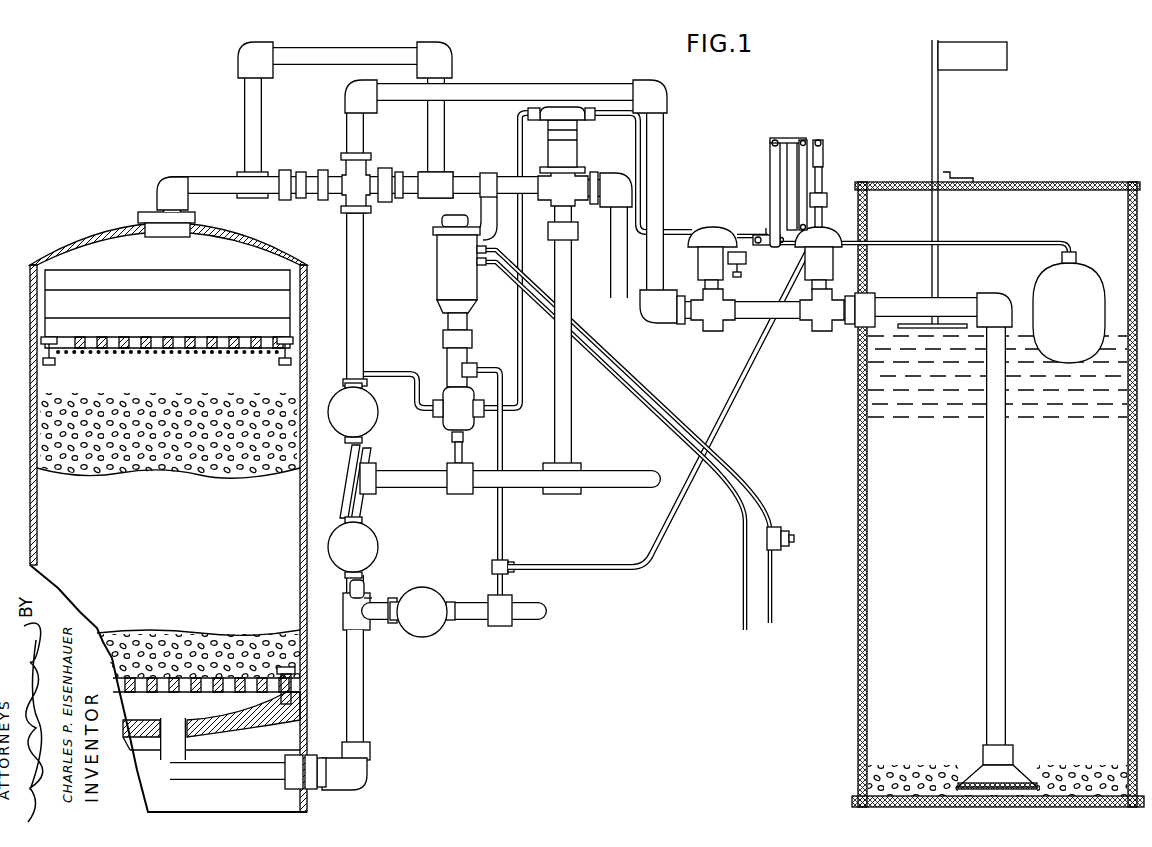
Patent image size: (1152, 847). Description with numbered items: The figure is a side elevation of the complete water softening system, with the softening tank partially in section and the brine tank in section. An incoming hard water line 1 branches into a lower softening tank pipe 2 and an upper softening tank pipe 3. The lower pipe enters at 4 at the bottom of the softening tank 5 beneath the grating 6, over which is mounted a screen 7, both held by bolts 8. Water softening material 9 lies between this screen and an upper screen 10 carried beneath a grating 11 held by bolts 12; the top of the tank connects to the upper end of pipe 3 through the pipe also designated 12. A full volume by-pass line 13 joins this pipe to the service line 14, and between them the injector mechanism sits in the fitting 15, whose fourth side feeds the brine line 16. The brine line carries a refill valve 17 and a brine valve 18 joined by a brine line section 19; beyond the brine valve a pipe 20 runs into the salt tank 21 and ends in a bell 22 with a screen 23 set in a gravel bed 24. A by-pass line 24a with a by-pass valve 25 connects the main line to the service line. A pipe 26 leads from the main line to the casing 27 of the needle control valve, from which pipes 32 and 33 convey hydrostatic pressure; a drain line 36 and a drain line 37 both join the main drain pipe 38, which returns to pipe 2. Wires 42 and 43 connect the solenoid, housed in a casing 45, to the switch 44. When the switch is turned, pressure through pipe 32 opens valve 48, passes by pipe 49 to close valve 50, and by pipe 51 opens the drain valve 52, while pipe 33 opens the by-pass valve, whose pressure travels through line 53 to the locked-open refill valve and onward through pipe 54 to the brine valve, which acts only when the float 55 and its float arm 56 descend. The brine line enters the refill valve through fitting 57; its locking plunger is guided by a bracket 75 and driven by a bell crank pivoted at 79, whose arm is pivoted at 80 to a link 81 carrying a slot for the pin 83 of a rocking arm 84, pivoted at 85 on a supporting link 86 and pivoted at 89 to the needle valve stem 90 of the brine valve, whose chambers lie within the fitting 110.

The incoming hard water line 1 is at (640, 476).
The lower softening tank pipe 2 is at (365, 665).
The upper softening tank pipe 3 is at (362, 266).
The entry of lower tank pipe 4 is at (172, 722).
The softening tank 5 is at (343, 607).
The grating 6 is at (140, 693).
The screen 7 is at (222, 693).
The bolts 8 is at (297, 672).
The water softening material 9 is at (232, 402).
The upper screen 10 is at (154, 357).
The grating 11 is at (214, 340).
The bolts / pipe 12 is at (210, 180).
The full volume by-pass line 13 is at (309, 51).
The service line 14 is at (465, 184).
The fitting 15 is at (345, 167).
The brine line 16 is at (366, 123).
The refill valve 17 is at (698, 268).
The brine valve 18 is at (826, 268).
The brine line section 19 is at (758, 310).
The pipe 20 is at (905, 297).
The salt tank 21 is at (858, 437).
The bell 22 is at (980, 757).
The screen 23 is at (1018, 770).
The gravel bed 24 is at (900, 768).
The by-pass line 24a is at (574, 421).
The by-pass valve 25 is at (580, 149).
The pipe 26 is at (464, 453).
The casing of needle control valve 27 is at (466, 424).
The pipe 32 is at (386, 372).
The pipe 33 is at (522, 411).
The drain line 36 is at (505, 512).
The drain line 37 is at (650, 562).
The main drain pipe 38 is at (525, 624).
The wire 42 is at (722, 490).
The wire 43 is at (745, 472).
The switch 44 is at (788, 533).
The casing 45 is at (444, 278).
The valve 48 is at (378, 402).
The pipe 49 is at (345, 483).
The valve 50 is at (380, 535).
The pipe 51 is at (350, 581).
The drain valve 52 is at (428, 637).
The line 53 is at (637, 158).
The pipe 54 is at (760, 228).
The float 55 is at (1040, 274).
The float arm 56 is at (985, 243).
The fitting 57 is at (697, 326).
The bracket 75 is at (740, 277).
The pivot 79 is at (763, 247).
The pivot 80 is at (781, 244).
The link 81 is at (770, 172).
The pin 83 is at (775, 139).
The rocking arm 84 is at (790, 137).
The pivot 85 is at (805, 139).
The supporting link 86 is at (787, 153).
The pivot 89 is at (825, 141).
The valve stem 90 is at (823, 174).
The fitting 110 is at (805, 327).